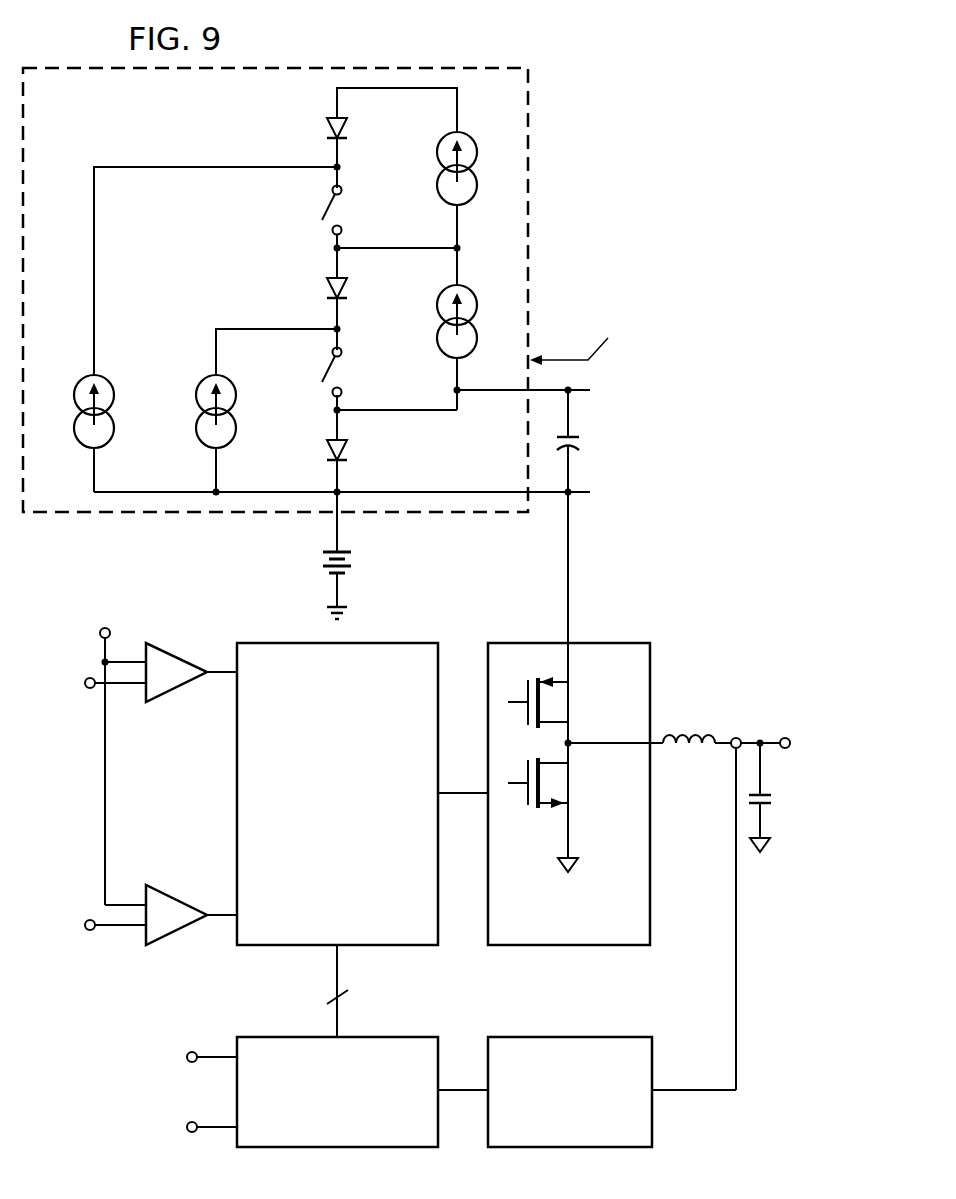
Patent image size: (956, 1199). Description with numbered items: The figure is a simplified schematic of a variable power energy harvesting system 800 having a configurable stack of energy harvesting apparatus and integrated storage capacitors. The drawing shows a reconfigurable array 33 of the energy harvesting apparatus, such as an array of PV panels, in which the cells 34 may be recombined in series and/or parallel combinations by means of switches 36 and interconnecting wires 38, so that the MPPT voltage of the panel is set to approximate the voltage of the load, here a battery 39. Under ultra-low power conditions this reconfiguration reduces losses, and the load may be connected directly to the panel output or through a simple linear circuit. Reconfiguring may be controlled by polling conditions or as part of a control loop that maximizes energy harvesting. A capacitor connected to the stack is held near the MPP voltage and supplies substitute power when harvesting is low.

The variable power energy harvesting system 800 is at (692, 176).
The reconfigurable array 33 is at (84, 64).
The current source (photovoltaic cell) 34 is at (468, 140).
The switch 36 is at (330, 210).
The interconnect wire 38 is at (94, 270).
The battery 39 is at (345, 568).